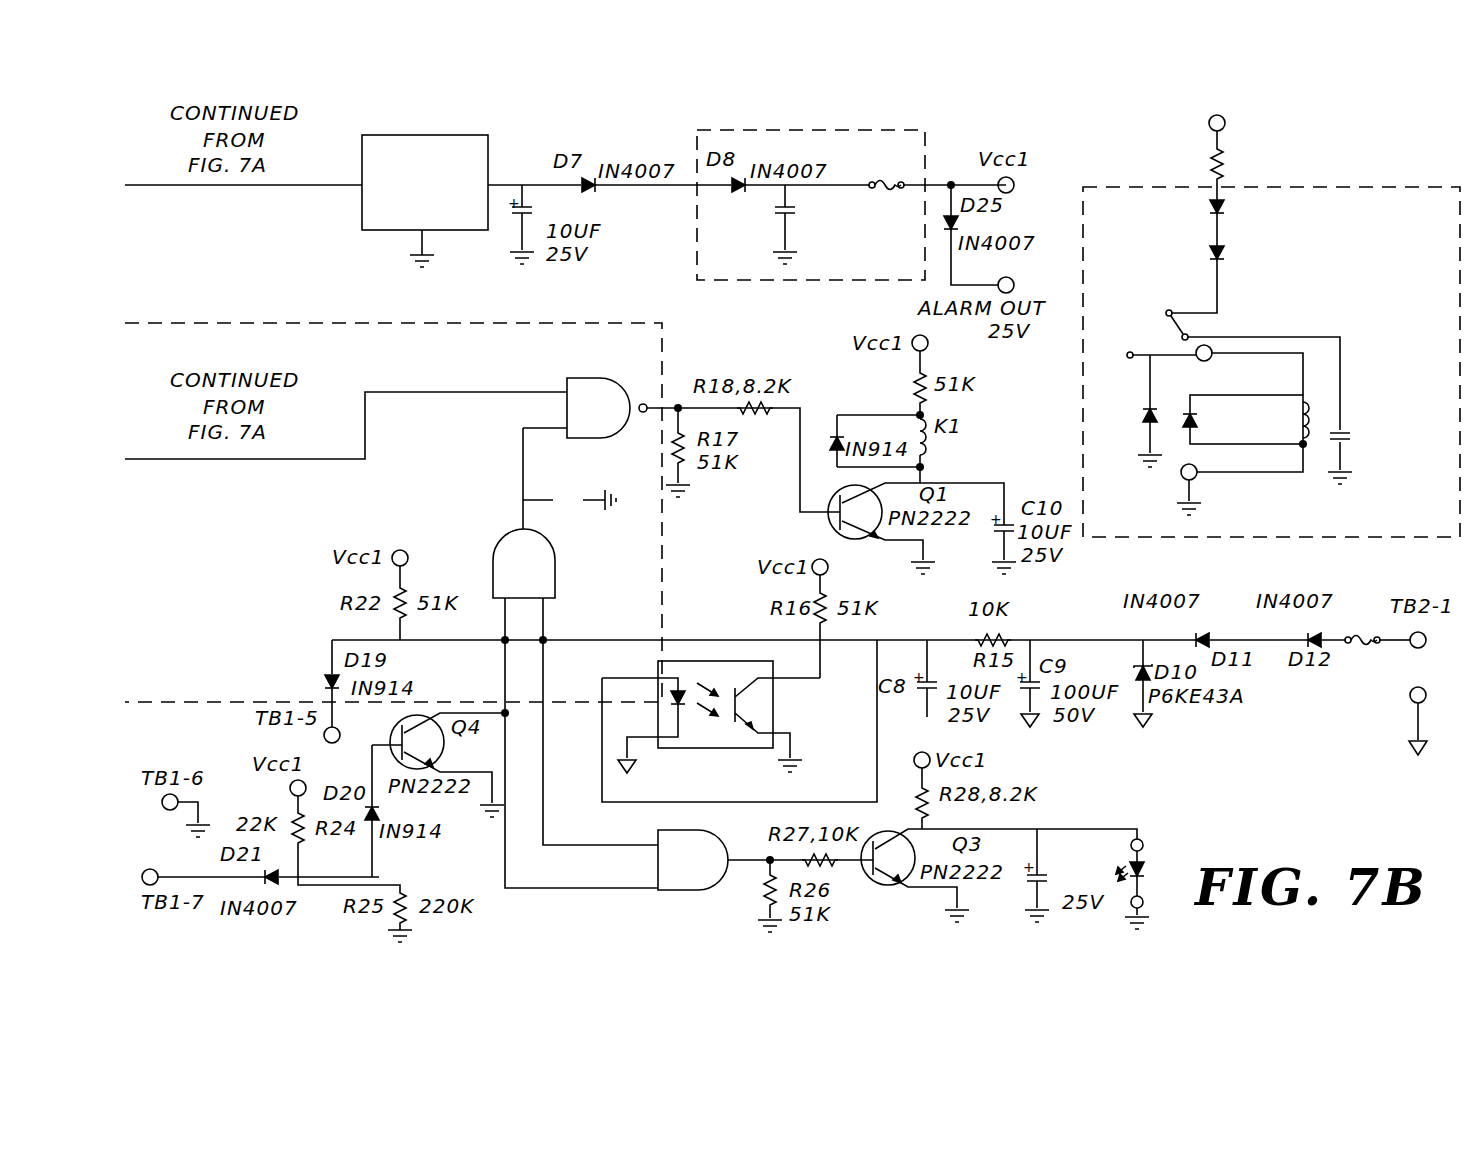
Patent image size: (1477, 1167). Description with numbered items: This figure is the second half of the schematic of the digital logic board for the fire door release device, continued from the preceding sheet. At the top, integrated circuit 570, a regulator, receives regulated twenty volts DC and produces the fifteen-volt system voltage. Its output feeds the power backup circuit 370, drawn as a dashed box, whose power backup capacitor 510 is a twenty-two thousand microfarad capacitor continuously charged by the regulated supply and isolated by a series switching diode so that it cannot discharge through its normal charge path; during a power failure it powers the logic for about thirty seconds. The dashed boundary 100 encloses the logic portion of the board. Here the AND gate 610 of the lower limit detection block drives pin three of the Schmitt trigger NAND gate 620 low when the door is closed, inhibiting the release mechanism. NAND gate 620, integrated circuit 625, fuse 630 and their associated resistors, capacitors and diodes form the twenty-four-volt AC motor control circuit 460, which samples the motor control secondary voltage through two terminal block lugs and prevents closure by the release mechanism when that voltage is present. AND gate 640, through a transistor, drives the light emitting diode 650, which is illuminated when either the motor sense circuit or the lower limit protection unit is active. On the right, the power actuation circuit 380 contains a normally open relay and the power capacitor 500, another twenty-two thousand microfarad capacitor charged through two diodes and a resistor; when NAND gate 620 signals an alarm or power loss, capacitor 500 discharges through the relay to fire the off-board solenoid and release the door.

The integrated circuit 570 is at (425, 135).
The power backup circuit 370 is at (811, 184).
The power backup capacitor 510 is at (773, 220).
The control circuit boundary 100 is at (356, 321).
The NAND gate 620 is at (589, 378).
The AND gate 610 is at (493, 545).
The integrated circuit 625 is at (735, 748).
The AND gate 640 is at (734, 880).
The light emitting diode 650 is at (1146, 860).
The fuse 630 is at (1380, 646).
The motor control circuit 460 is at (1426, 752).
The power actuation circuit 380 is at (1271, 324).
The power capacitor 500 is at (1346, 438).